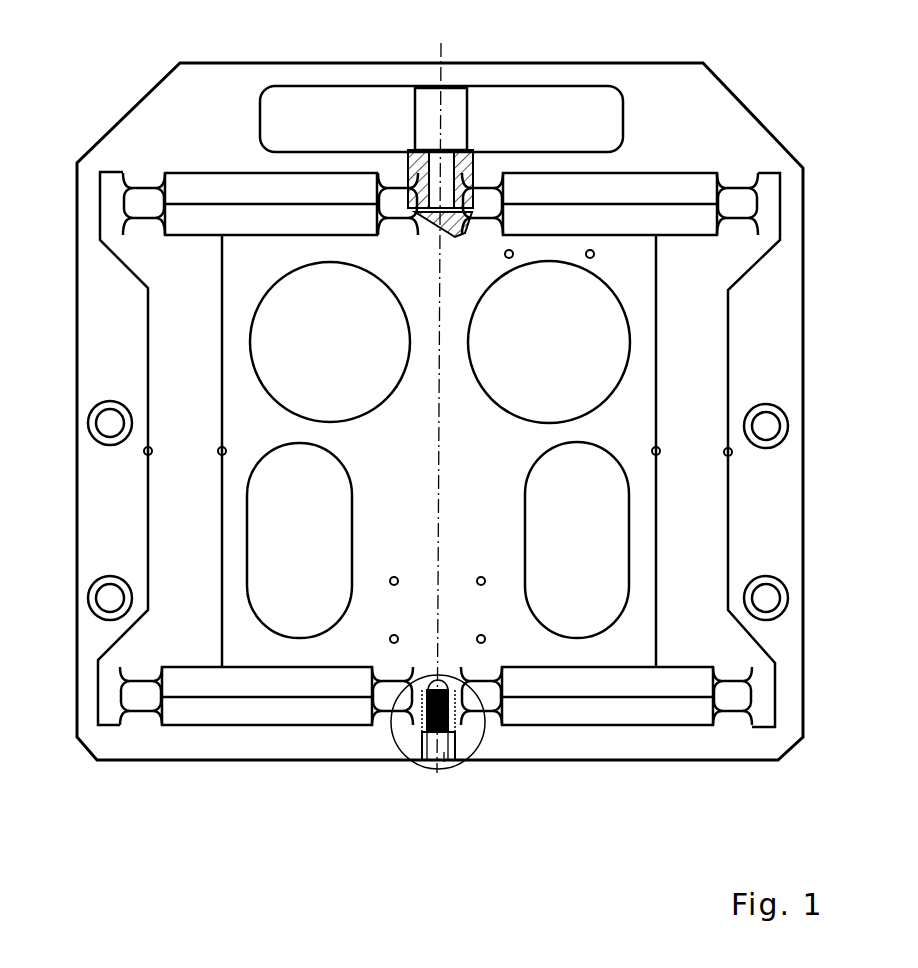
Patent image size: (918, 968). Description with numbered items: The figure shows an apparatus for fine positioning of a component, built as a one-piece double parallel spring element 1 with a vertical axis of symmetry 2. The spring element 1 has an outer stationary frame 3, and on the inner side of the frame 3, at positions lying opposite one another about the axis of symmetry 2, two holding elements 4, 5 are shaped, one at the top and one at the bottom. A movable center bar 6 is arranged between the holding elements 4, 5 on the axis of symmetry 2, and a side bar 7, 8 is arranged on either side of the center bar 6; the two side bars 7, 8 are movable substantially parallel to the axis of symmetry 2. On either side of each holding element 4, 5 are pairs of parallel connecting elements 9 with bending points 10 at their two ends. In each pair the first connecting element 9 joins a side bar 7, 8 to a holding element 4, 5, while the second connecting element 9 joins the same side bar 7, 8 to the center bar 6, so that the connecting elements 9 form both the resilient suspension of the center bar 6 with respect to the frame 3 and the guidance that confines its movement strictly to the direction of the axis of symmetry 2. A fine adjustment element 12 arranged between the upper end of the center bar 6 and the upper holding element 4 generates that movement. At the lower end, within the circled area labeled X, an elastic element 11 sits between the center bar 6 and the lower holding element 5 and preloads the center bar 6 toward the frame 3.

The double parallel spring element 1 is at (658, 67).
The axis of symmetry 2 is at (443, 43).
The outer stationary frame 3 is at (765, 355).
The holding element 4 is at (468, 180).
The holding element 5 is at (457, 708).
The center bar 6 is at (250, 418).
The side bar 7 is at (702, 508).
The side bar 8 is at (177, 520).
The connecting element 9 is at (203, 222).
The bending point 10 is at (752, 223).
The elastic element 11 is at (444, 762).
The fine adjustment element 12 is at (427, 117).
The circled detail area X is at (399, 773).